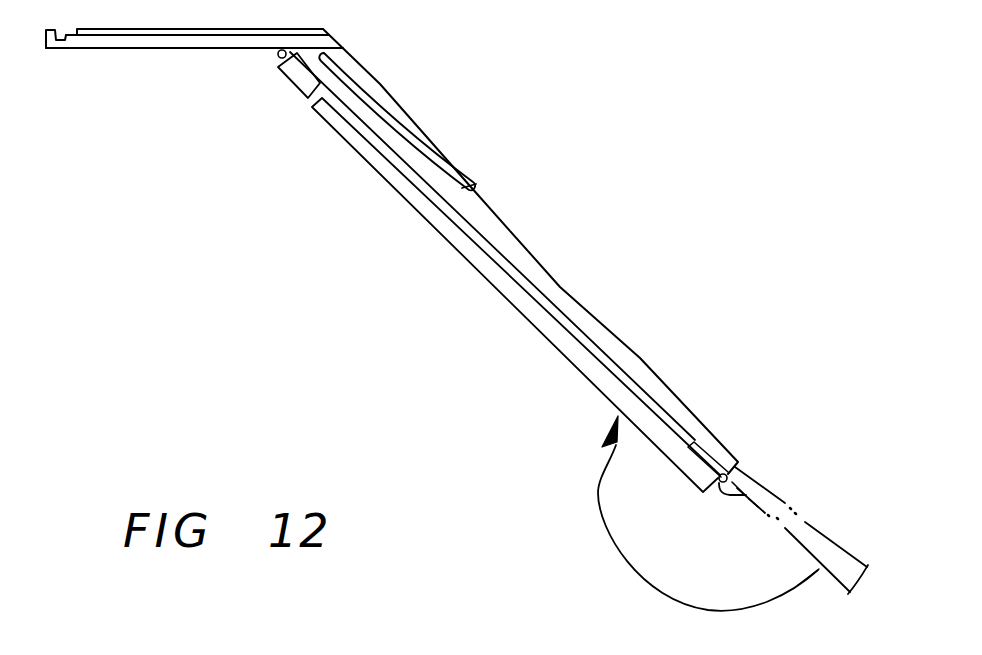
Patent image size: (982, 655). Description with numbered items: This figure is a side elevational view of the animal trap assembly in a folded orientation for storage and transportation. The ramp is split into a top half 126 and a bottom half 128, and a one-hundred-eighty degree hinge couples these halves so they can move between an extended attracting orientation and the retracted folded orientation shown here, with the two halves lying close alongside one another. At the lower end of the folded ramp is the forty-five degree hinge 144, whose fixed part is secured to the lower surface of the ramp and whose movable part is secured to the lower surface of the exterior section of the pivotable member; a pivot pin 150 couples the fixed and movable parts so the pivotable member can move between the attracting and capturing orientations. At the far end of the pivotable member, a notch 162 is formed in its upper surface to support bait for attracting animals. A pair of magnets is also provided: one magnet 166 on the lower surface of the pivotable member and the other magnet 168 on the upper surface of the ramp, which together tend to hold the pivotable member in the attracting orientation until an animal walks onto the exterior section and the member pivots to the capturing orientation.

The top half 126 is at (527, 262).
The bottom half 128 is at (468, 249).
The 45 degree hinge 144 is at (758, 484).
The pivot pin 150 is at (727, 475).
The notch 162 is at (72, 48).
The magnet 166 is at (463, 183).
The magnet 168 is at (462, 188).